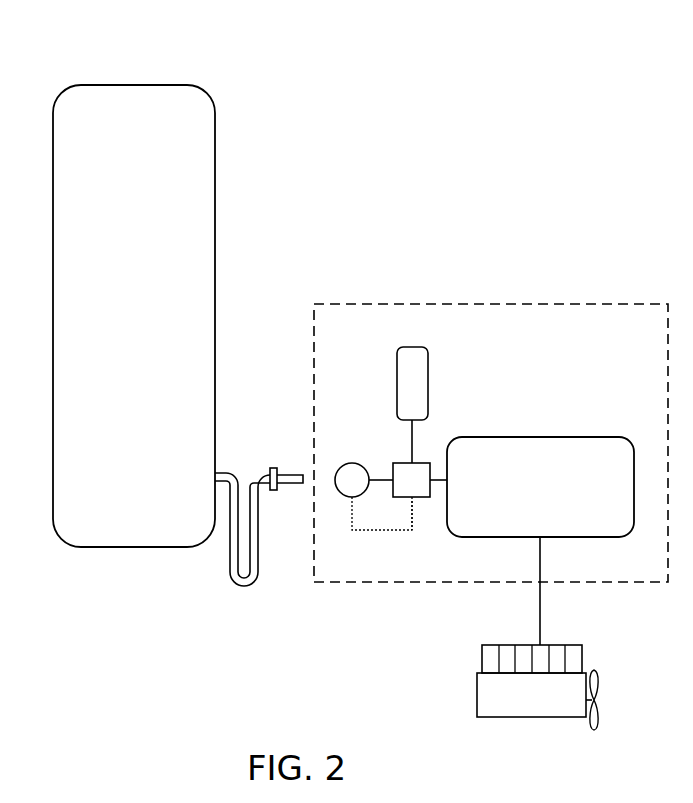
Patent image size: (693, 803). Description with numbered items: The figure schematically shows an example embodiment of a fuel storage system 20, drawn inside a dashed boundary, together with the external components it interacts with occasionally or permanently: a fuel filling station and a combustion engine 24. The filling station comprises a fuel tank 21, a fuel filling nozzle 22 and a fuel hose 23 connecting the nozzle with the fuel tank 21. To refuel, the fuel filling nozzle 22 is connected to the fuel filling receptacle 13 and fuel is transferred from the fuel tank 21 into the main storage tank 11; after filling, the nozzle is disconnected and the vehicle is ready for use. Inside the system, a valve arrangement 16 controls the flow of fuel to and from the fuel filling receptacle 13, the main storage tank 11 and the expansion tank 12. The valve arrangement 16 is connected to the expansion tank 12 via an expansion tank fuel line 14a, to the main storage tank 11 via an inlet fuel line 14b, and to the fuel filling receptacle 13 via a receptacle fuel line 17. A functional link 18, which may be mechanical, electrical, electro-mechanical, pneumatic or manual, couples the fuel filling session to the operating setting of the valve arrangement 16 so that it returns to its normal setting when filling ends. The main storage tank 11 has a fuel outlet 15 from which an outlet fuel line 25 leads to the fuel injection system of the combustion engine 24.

The main storage tank 11 is at (550, 488).
The expansion tank 12 is at (413, 400).
The fuel filling receptacle 13 is at (352, 478).
The expansion tank fuel line 14a is at (412, 448).
The inlet fuel line 14b is at (438, 482).
The fuel outlet 15 is at (540, 537).
The valve arrangement 16 is at (443, 478).
The receptacle fuel line 17 is at (382, 477).
The functional link 18 is at (365, 533).
The fuel storage system 20 is at (622, 303).
The fuel tank 21 is at (100, 452).
The fuel filling nozzle 22 is at (288, 490).
The fuel hose 23 is at (235, 537).
The combustion engine 24 is at (537, 700).
The outlet fuel line 25 is at (542, 608).